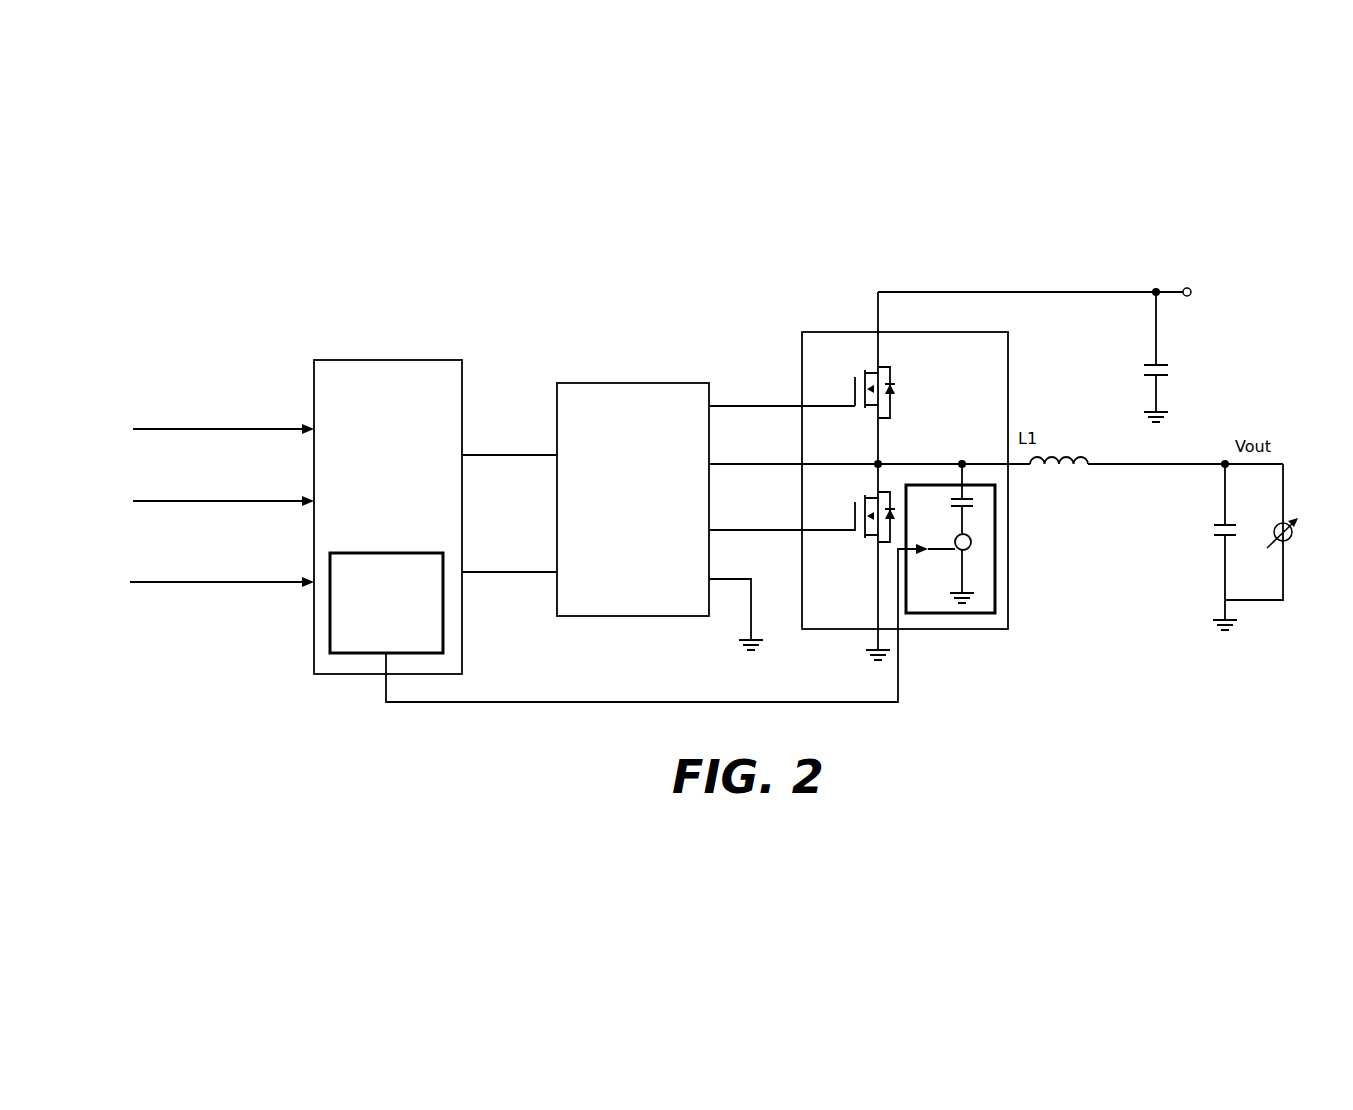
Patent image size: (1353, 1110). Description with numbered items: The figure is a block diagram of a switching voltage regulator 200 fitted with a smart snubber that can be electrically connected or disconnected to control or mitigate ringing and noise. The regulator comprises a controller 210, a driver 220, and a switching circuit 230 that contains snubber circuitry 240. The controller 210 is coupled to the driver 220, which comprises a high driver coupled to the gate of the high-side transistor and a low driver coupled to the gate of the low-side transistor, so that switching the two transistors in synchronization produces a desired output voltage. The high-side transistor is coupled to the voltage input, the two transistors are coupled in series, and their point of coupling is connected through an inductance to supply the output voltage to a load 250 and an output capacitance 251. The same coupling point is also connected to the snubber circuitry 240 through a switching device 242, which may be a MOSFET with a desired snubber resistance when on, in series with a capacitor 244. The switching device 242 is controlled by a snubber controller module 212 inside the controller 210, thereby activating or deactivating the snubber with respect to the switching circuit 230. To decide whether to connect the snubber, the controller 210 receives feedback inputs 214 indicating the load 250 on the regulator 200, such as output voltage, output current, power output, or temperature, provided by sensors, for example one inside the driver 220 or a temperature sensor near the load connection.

The voltage regulator 200 is at (1047, 203).
The controller 210 is at (393, 360).
The snubber controller module 212 is at (337, 628).
The feedback inputs 214 is at (133, 423).
The driver 220 is at (643, 383).
The switching circuit 230 is at (847, 332).
The snubber circuitry 240 is at (999, 556).
The switching device 242 is at (975, 541).
The capacitor 244 is at (974, 505).
The load 250 is at (1284, 520).
The output capacitance 251 is at (1215, 536).